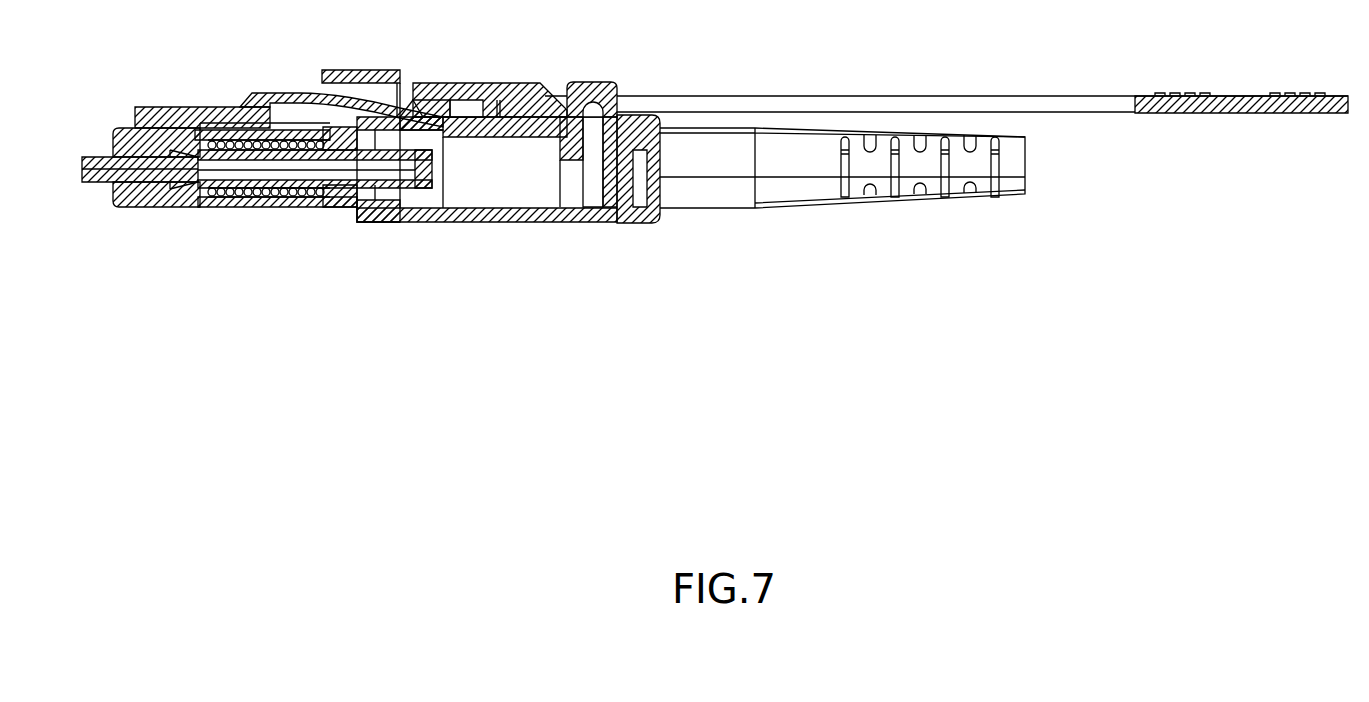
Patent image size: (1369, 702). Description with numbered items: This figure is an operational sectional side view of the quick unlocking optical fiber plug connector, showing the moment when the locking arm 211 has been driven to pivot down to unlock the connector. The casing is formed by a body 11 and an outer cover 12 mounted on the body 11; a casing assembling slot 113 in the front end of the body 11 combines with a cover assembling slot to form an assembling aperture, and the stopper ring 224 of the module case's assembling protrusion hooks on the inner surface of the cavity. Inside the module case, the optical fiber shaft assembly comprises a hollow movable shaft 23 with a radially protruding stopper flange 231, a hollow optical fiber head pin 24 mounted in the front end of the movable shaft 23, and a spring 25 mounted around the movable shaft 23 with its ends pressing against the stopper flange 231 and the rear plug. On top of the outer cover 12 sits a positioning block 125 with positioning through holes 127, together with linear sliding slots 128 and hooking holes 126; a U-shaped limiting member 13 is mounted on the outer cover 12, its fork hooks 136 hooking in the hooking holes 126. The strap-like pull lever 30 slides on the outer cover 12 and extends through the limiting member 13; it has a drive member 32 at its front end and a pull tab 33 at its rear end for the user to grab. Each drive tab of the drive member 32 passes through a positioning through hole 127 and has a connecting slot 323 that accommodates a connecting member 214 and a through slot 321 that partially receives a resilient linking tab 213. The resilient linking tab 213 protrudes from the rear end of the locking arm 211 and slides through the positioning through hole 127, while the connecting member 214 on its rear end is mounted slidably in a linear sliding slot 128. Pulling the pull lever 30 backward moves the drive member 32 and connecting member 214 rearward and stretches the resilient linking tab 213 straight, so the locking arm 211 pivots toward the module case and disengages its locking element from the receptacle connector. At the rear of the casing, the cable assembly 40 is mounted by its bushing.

The body 11 is at (555, 234).
The outer cover 12 is at (655, 108).
The limiting member 13 is at (607, 78).
The movable shaft 23 is at (327, 200).
The optical fiber head pin 24 is at (140, 185).
The spring 25 is at (258, 197).
The pull lever 30 is at (926, 78).
The drive member 32 is at (537, 83).
The pull tab 33 is at (1243, 113).
The cable assembly 40 is at (832, 222).
The casing assembling slot 113 is at (357, 215).
The positioning block 125 is at (388, 70).
The hooking hole 126 is at (654, 218).
The positioning through hole 127 is at (420, 108).
The linear sliding slot 128 is at (465, 135).
The fork hook 136 is at (600, 216).
The locking arm 211 is at (220, 112).
The resilient linking tab 213 is at (300, 96).
The connecting member 214 is at (497, 117).
The stopper ring 224 is at (393, 205).
The stopper flange 231 is at (205, 195).
The through slot 321 is at (428, 110).
The connecting slot 323 is at (467, 112).